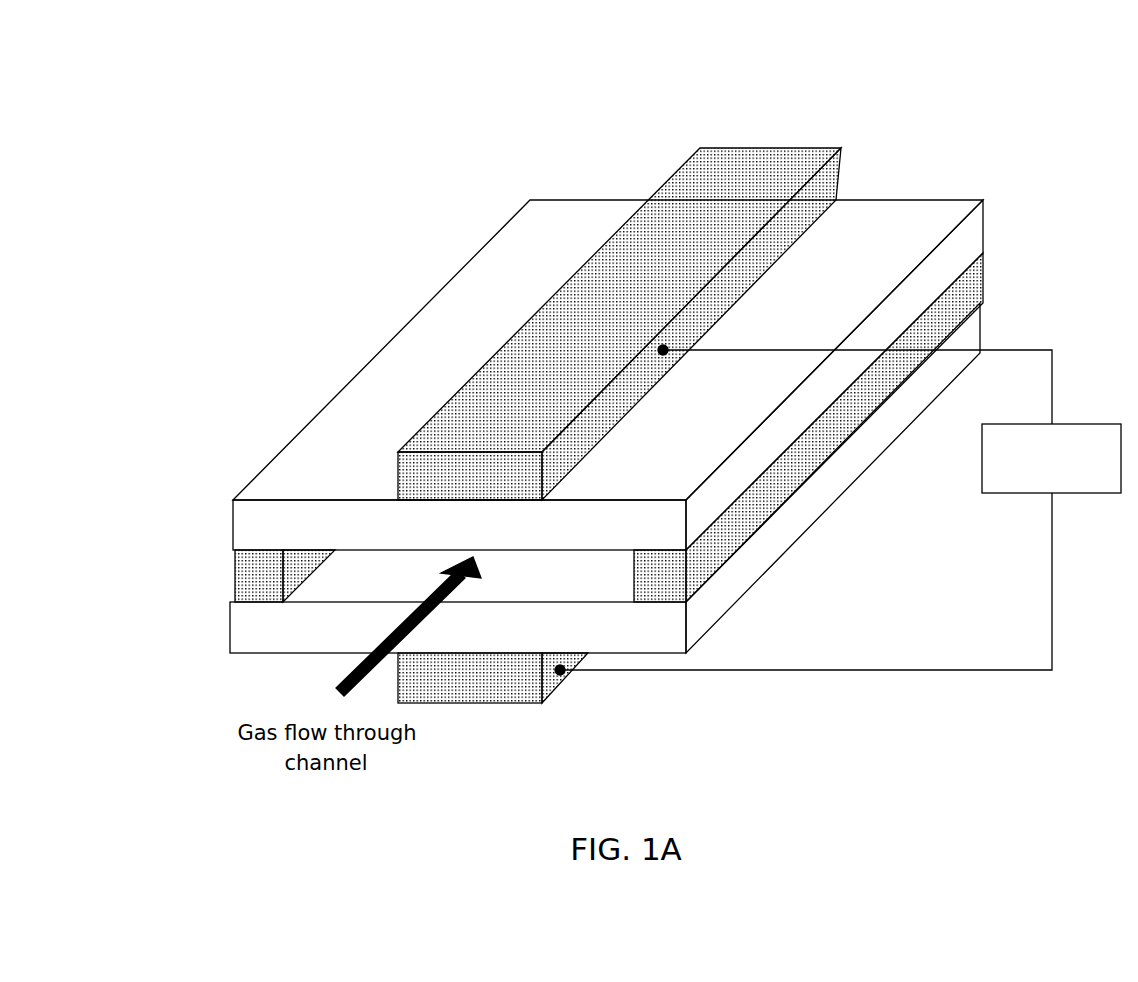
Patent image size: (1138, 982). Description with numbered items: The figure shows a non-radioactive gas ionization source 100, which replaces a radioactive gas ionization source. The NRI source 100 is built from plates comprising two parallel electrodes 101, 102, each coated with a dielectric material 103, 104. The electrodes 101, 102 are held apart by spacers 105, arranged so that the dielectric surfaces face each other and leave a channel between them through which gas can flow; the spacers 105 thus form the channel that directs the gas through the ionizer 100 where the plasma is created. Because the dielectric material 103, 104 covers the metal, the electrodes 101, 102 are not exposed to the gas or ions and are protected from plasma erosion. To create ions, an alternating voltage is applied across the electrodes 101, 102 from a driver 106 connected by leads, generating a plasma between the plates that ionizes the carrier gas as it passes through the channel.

The non-radioactive gas ionization source 100 is at (604, 422).
The electrode 101 is at (553, 332).
The electrode 102 is at (503, 677).
The dielectric material 103 is at (293, 473).
The dielectric material 104 is at (247, 630).
The spacers 105 is at (230, 563).
The Driver 106 is at (838, 510).